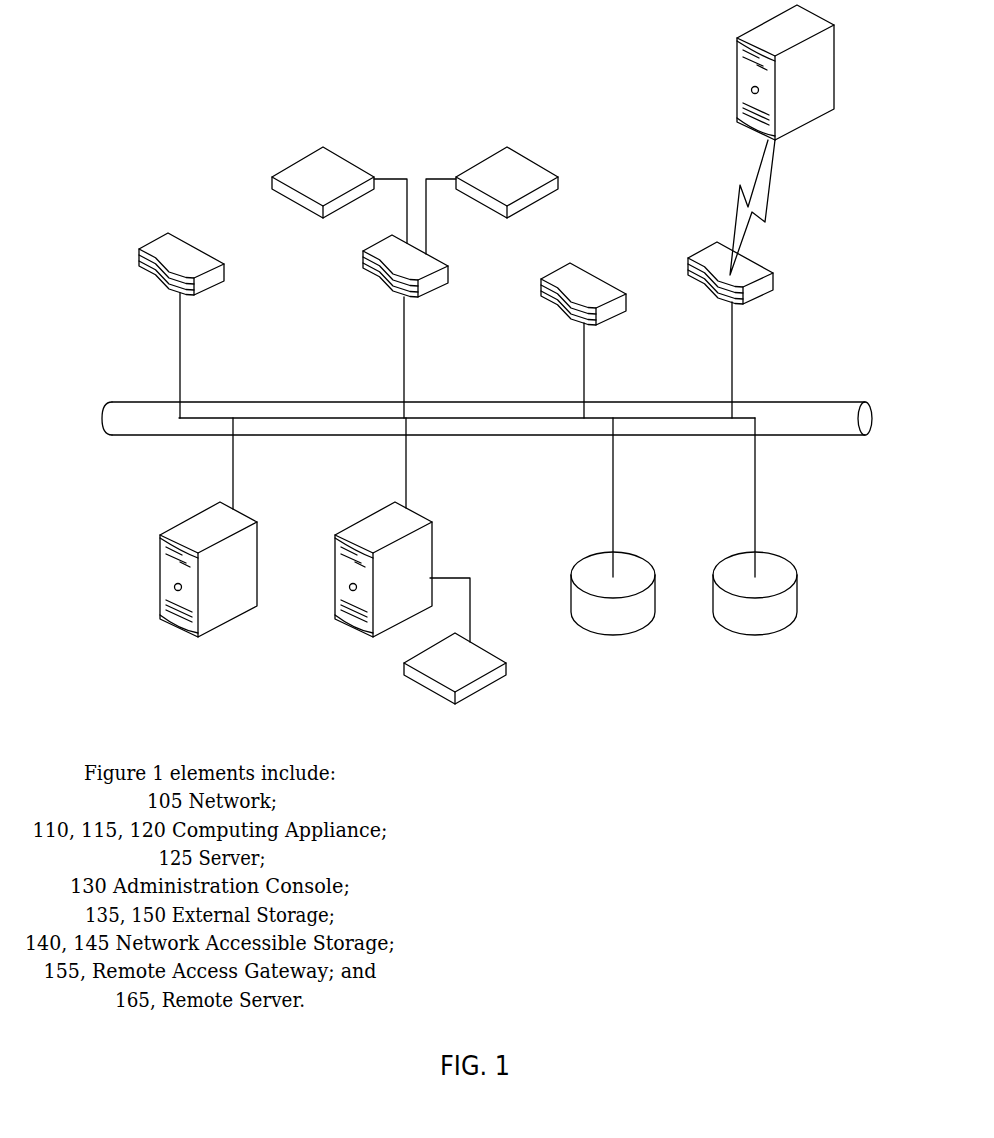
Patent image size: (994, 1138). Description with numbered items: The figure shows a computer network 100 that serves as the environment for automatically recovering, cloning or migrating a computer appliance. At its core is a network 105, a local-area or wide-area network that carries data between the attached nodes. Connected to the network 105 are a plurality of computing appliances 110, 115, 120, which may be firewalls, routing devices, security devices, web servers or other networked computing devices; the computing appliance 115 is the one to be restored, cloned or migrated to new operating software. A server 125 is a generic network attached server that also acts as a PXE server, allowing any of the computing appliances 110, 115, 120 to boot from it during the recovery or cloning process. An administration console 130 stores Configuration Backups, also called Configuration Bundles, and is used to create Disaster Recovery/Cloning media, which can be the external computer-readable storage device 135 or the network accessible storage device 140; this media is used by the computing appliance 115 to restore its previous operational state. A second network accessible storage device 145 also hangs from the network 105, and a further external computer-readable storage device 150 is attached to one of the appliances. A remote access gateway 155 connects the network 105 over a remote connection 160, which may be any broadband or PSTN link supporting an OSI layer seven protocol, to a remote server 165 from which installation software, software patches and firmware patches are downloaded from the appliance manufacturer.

The computer network 100 is at (142, 122).
The network 105 is at (133, 402).
The computing appliance 110 is at (208, 297).
The computing appliance 115 is at (435, 297).
The computing appliance 120 is at (610, 327).
The server 125 is at (172, 528).
The administration console 130 is at (360, 518).
The external computer-readable storage device 135 is at (537, 200).
The network accessible storage device 140 is at (645, 627).
The network accessible storage device 145 is at (780, 632).
The external computer-readable storage device 150 is at (290, 198).
The remote access gateway 155 is at (765, 300).
The remote connection 160 is at (738, 200).
The remote server 165 is at (797, 125).